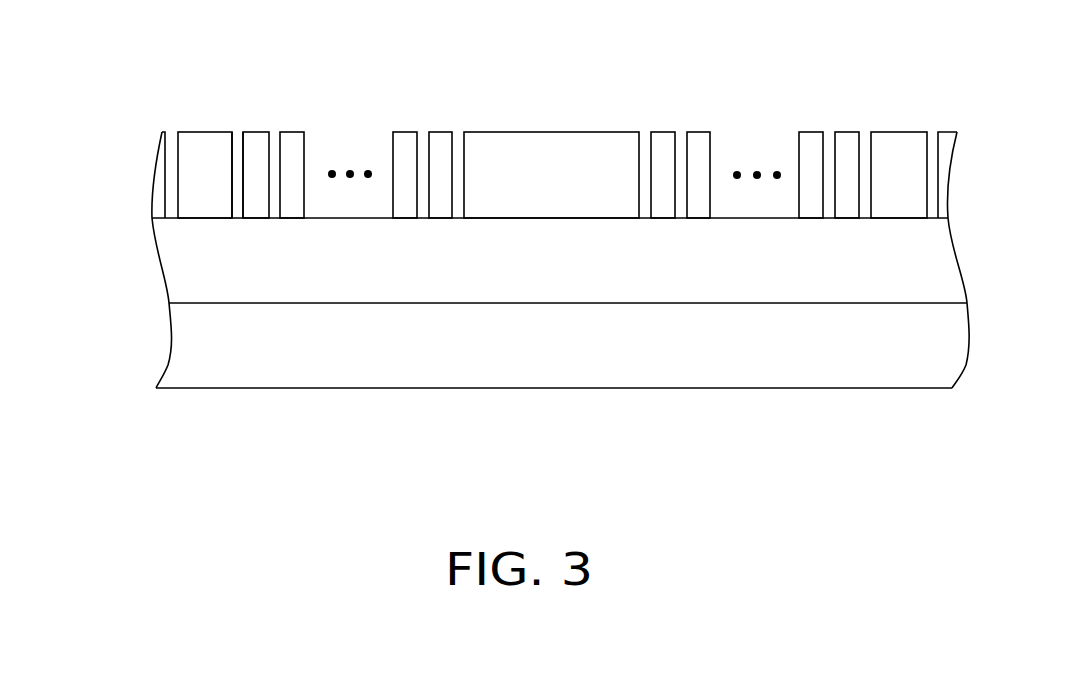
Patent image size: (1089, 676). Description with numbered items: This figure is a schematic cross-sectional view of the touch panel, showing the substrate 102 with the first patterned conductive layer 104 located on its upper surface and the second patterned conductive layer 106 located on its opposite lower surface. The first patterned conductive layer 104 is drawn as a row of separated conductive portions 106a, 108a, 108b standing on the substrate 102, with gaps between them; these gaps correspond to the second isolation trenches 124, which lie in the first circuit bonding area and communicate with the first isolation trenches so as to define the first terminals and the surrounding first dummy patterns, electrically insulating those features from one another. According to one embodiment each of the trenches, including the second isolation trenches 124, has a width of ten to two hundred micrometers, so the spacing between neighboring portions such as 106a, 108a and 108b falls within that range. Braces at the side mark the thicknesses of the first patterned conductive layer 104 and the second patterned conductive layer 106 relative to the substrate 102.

The substrate 102 is at (175, 260).
The first patterned conductive layer 104 is at (1012, 133).
The second patterned conductive layer 106 is at (1012, 305).
The patterned material layer portion 106a is at (195, 142).
The first pattern 108a is at (288, 147).
The second pattern 108b is at (504, 147).
The second isolation trenches 124 is at (238, 147).